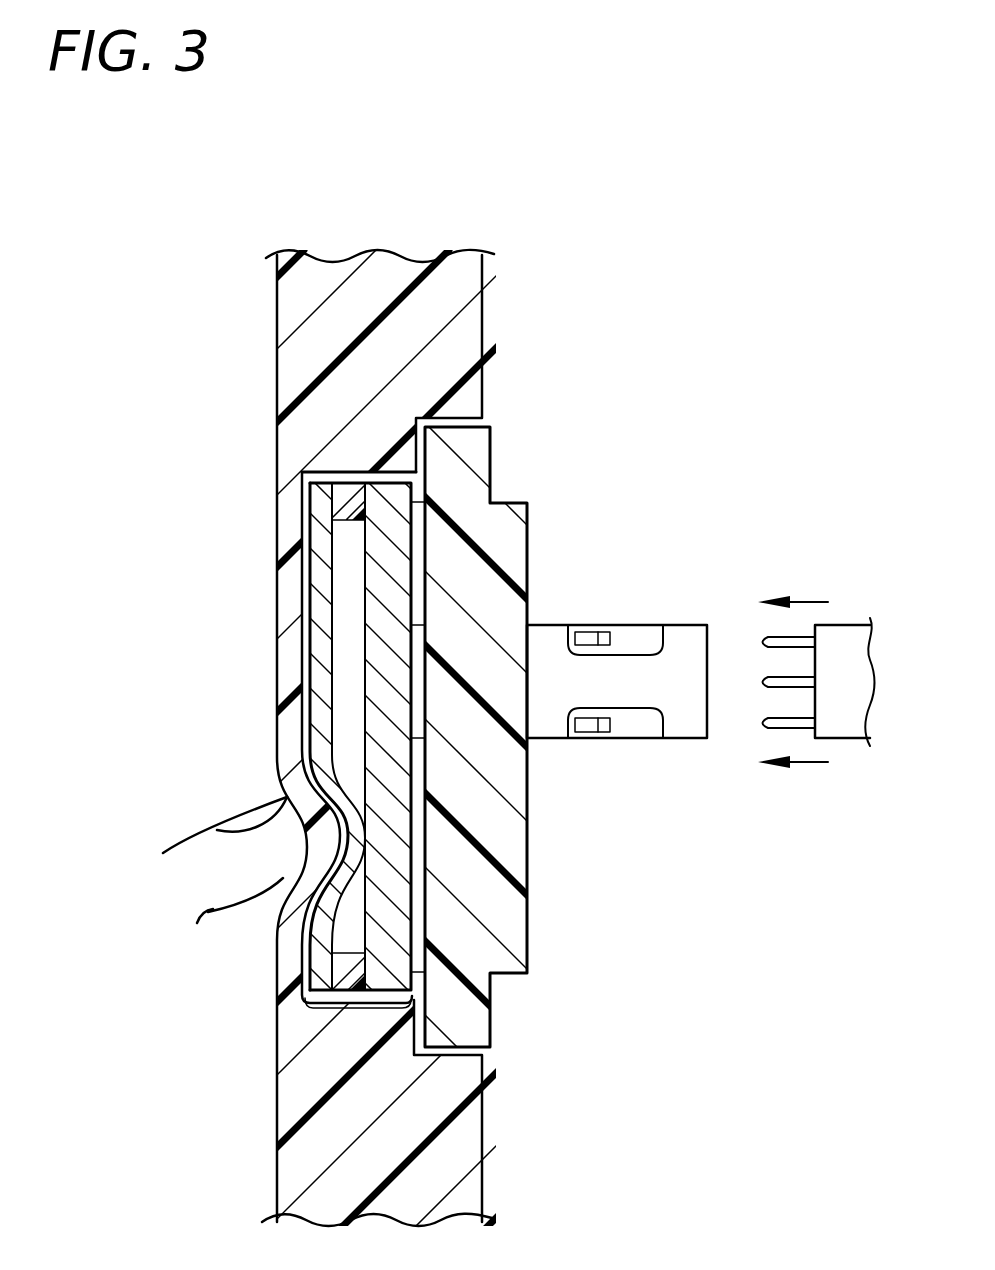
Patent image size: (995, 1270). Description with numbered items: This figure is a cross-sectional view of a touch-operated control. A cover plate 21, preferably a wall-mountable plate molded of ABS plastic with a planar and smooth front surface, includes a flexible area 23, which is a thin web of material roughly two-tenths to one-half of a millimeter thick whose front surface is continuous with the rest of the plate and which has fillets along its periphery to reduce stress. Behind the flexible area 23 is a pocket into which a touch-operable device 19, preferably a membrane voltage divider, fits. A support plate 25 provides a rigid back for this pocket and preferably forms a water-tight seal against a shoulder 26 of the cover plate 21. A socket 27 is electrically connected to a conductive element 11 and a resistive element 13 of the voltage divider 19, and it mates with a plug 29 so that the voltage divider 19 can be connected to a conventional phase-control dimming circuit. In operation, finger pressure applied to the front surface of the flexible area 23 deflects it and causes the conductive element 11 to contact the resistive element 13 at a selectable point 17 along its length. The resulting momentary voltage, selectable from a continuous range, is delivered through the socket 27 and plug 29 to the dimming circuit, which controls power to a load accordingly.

The conductive element 11 is at (330, 584).
The resistive element 13 is at (408, 506).
The selectable point 17 is at (380, 843).
The touch-operable device 19 is at (350, 1028).
The cover plate 21 is at (277, 328).
The flexible area 23 is at (280, 730).
The support plate 25 is at (512, 607).
The shoulder 26 is at (437, 452).
The socket 27 is at (690, 633).
The plug 29 is at (853, 730).